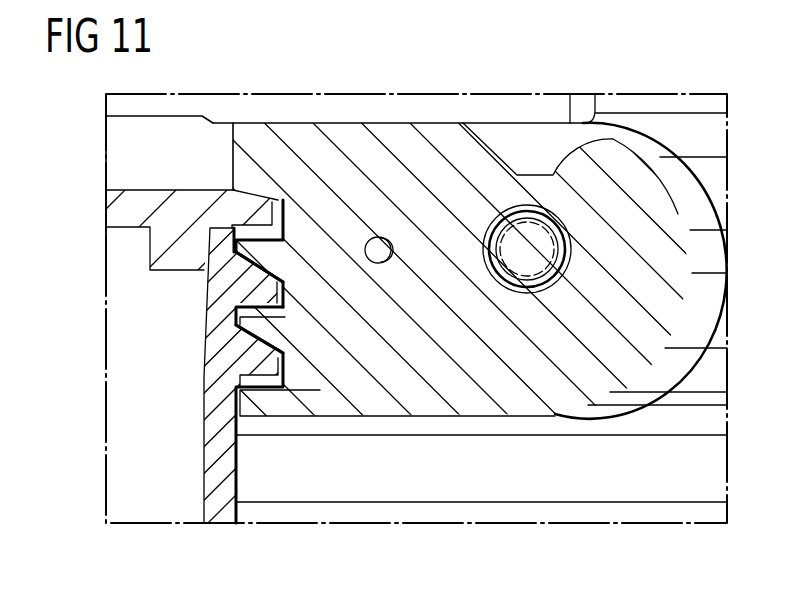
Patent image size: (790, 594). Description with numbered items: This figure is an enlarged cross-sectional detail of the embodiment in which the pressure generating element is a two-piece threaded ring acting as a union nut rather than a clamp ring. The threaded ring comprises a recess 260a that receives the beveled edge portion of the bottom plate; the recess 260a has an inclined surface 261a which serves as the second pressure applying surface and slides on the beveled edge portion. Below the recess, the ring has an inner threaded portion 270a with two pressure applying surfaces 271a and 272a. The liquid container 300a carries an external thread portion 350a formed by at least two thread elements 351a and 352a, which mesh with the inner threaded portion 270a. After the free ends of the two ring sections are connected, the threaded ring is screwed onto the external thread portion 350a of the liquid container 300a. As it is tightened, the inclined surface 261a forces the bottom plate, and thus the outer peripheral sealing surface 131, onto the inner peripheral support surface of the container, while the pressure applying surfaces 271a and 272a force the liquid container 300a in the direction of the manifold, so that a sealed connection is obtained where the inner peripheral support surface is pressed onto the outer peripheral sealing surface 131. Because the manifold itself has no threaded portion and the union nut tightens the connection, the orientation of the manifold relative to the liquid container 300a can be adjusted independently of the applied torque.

The outer peripheral sealing surface 131 is at (207, 240).
The recess 260a is at (282, 213).
The inclined surface 261a is at (262, 200).
The inner threaded portion 270a is at (263, 347).
The pressure applying surface 271a is at (262, 312).
The pressure applying surface 272a is at (267, 383).
The liquid container 300a is at (228, 484).
The external thread portion 350a is at (229, 317).
The thread element 351a is at (244, 282).
The thread element 352a is at (244, 351).